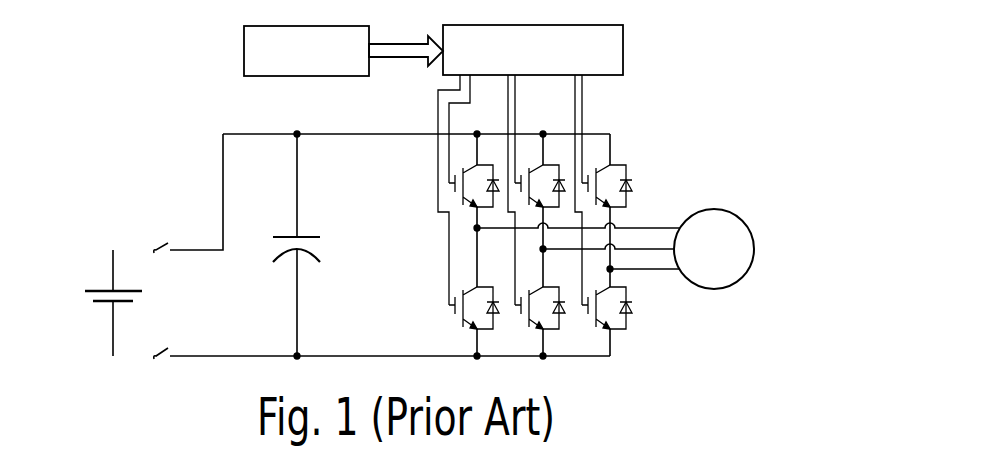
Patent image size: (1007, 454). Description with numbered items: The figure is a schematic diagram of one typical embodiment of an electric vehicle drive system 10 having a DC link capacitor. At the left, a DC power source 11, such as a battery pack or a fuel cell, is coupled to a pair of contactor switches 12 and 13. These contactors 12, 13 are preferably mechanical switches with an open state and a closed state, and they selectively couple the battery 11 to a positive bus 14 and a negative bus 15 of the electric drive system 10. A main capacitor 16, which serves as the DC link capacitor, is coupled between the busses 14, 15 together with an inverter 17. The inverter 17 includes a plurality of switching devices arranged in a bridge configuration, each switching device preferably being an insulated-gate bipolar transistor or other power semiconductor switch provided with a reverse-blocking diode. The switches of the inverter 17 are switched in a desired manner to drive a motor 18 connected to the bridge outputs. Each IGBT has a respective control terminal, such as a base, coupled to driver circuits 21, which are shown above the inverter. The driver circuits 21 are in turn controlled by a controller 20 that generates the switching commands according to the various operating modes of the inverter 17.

The electric vehicle drive system 10 is at (182, 153).
The DC power source 11 is at (97, 288).
The contactor switch 12 is at (160, 247).
The contactor switch 13 is at (164, 353).
The positive bus 14 is at (253, 134).
The negative bus 15 is at (244, 354).
The main capacitor 16 is at (311, 237).
The inverter 17 is at (627, 157).
The motor 18 is at (712, 289).
The controller 20 is at (244, 50).
The driver circuits 21 is at (623, 51).